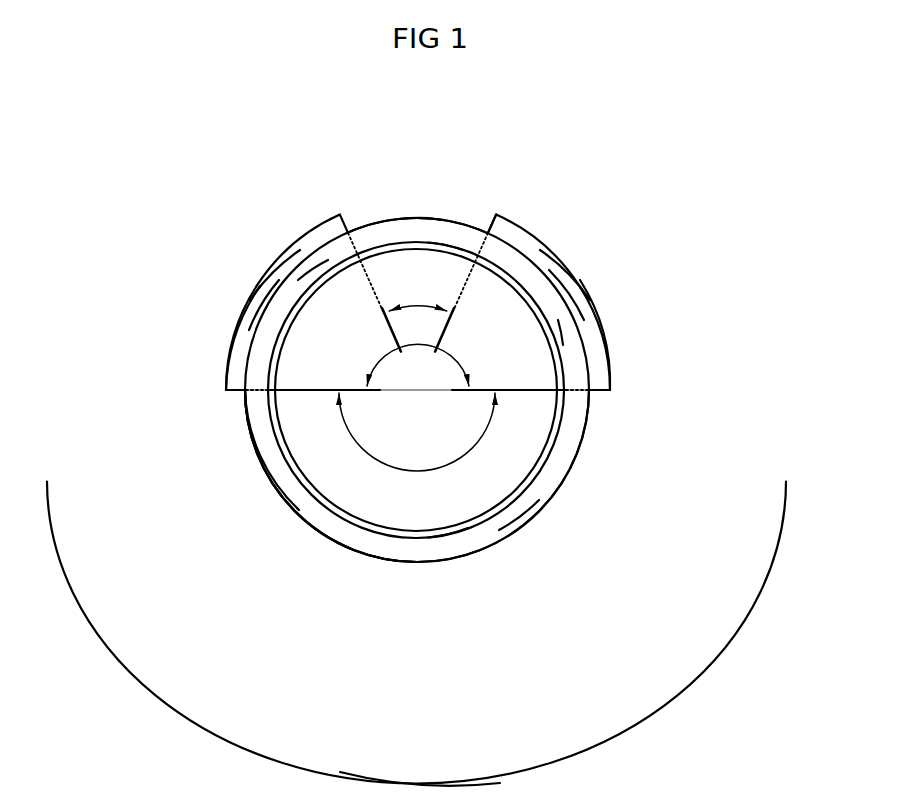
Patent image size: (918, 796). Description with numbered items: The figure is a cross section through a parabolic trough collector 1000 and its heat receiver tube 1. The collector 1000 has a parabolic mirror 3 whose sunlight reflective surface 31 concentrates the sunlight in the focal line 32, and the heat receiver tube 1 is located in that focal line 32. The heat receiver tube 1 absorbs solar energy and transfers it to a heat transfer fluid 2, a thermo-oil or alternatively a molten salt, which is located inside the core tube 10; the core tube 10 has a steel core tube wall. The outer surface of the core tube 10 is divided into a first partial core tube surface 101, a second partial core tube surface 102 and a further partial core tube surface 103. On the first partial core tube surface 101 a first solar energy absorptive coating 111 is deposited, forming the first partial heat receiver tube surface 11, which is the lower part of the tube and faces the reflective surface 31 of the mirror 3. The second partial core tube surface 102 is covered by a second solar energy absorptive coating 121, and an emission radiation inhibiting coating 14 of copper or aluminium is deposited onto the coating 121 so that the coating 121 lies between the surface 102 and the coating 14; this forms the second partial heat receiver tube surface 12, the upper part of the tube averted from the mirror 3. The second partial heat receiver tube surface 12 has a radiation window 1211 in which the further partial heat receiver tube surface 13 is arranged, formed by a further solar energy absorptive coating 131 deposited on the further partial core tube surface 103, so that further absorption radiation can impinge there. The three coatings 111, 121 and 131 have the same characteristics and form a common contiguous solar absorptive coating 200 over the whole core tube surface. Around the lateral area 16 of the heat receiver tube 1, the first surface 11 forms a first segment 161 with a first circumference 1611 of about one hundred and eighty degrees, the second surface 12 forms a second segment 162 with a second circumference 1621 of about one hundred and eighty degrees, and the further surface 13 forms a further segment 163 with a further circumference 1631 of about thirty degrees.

The heat receiver tube 1 is at (551, 194).
The parabolic trough collector 1000 is at (715, 180).
The heat transfer fluid 2 is at (486, 325).
The parabolic mirror 3 is at (766, 584).
The sunlight reflective surface 31 is at (499, 772).
The focal line 32 is at (404, 414).
The core tube 10 is at (558, 425).
The first partial core tube surface 101 is at (450, 540).
The second partial core tube surface 102 is at (328, 266).
The further partial core tube surface 103 is at (449, 237).
The first partial heat receiver tube surface 11 is at (375, 560).
The first solar energy absorptive coating 111 is at (513, 521).
The second partial heat receiver tube surface 12 is at (271, 259).
The second solar energy absorptive coating 121 is at (259, 339).
The radiation window 1211 is at (481, 209).
The further partial heat receiver tube surface 13 is at (401, 215).
The further solar energy absorptive coating 131 is at (430, 230).
The emission radiation inhibiting coating 14 is at (266, 287).
The lateral area 16 is at (245, 436).
The first segment 161 is at (331, 476).
The second segment 162 is at (223, 365).
The further segment 163 is at (377, 220).
The first circumference 1611 is at (401, 469).
The angular extent of second segment 1621 is at (464, 364).
The angular extent of third segment 1631 is at (413, 305).
The common contiguous solar absorptive coating 200 is at (414, 228).